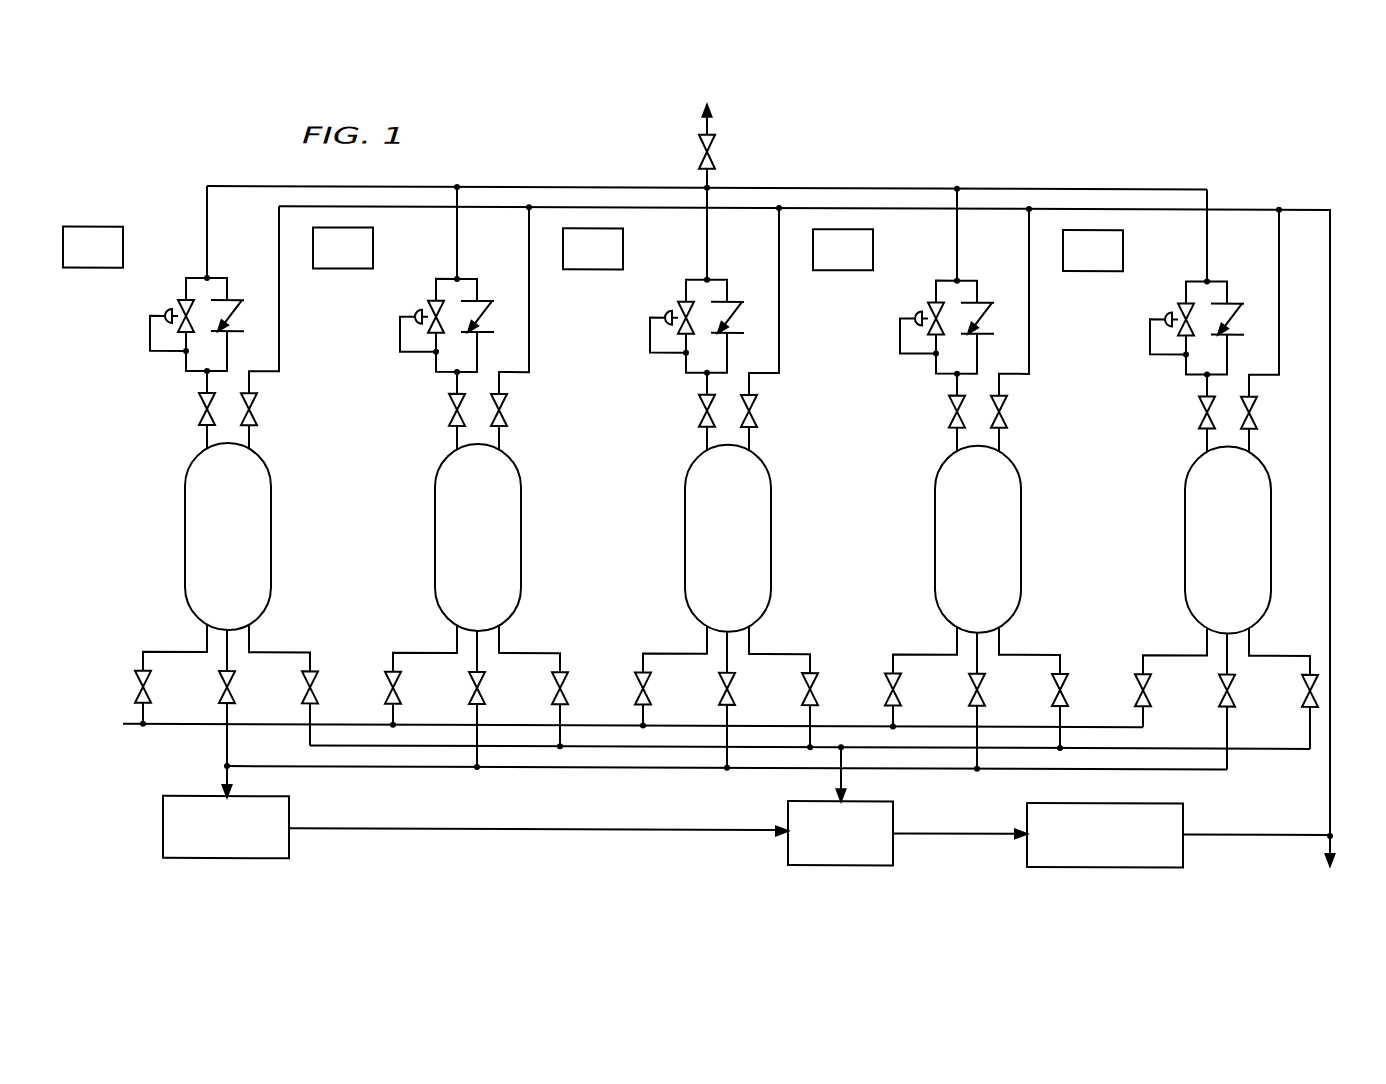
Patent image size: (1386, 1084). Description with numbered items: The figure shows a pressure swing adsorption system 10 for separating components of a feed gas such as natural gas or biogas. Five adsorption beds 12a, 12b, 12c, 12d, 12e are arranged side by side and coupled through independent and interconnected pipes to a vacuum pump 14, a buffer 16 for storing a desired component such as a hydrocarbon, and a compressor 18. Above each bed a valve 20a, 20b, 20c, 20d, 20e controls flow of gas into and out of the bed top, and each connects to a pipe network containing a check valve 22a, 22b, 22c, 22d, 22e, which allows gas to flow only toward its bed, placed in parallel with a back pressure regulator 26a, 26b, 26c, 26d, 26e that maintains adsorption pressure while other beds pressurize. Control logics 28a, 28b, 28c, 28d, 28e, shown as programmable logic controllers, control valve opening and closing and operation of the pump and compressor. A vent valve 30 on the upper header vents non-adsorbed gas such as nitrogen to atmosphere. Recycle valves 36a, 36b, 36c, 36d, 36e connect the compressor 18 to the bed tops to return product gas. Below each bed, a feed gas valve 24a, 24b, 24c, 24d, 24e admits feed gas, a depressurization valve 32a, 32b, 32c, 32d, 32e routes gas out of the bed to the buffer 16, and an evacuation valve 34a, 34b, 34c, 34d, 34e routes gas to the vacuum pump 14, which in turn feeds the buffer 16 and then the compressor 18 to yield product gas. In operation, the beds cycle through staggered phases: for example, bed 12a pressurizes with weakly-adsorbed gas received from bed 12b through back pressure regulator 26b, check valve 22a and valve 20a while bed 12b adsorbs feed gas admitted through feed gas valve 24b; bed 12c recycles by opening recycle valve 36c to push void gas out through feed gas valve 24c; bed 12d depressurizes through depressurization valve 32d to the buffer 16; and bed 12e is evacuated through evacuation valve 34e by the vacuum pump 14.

The pressure swing adsorption system 10 is at (1105, 140).
The adsorption bed 12a is at (210, 573).
The adsorption bed 12b is at (478, 537).
The adsorption bed 12c is at (728, 538).
The adsorption bed 12d is at (978, 539).
The adsorption bed 12e is at (1228, 539).
The vacuum pump 14 is at (213, 860).
The buffer 16 is at (850, 863).
The compressor 18 is at (1105, 864).
The valve 20a is at (199, 413).
The valve 20b is at (427, 411).
The valve 20c is at (677, 412).
The valve 20d is at (927, 412).
The valve 20e is at (1177, 413).
The check valve 22a is at (233, 293).
The check valve 22b is at (488, 290).
The check valve 22c is at (738, 291).
The check valve 22d is at (988, 292).
The check valve 22e is at (1238, 293).
The feed gas valve 24a is at (135, 680).
The feed gas valve 24b is at (391, 674).
The feed gas valve 24c is at (641, 675).
The feed gas valve 24d is at (891, 676).
The feed gas valve 24e is at (1141, 677).
The back pressure regulator 26a is at (177, 302).
The back pressure regulator 26b is at (419, 281).
The back pressure regulator 26c is at (669, 281).
The back pressure regulator 26d is at (919, 282).
The back pressure regulator 26e is at (1169, 283).
The control logic 28a is at (93, 226).
The control logic 28b is at (343, 274).
The control logic 28c is at (593, 275).
The control logic 28d is at (843, 276).
The control logic 28e is at (1093, 277).
The vent valve 30 is at (698, 160).
The depressurization valve 32a is at (302, 680).
The depressurization valve 32b is at (530, 686).
The depressurization valve 32c is at (780, 687).
The depressurization valve 32d is at (1030, 688).
The depressurization valve 32e is at (1280, 689).
The evacuation valve 34a is at (219, 680).
The evacuation valve 34b is at (447, 699).
The evacuation valve 34c is at (697, 700).
The evacuation valve 34d is at (947, 700).
The evacuation valve 34e is at (1197, 701).
The recycle valve 36a is at (257, 413).
The recycle valve 36b is at (527, 328).
The recycle valve 36c is at (777, 329).
The recycle valve 36d is at (1027, 330).
The recycle valve 36e is at (1277, 331).